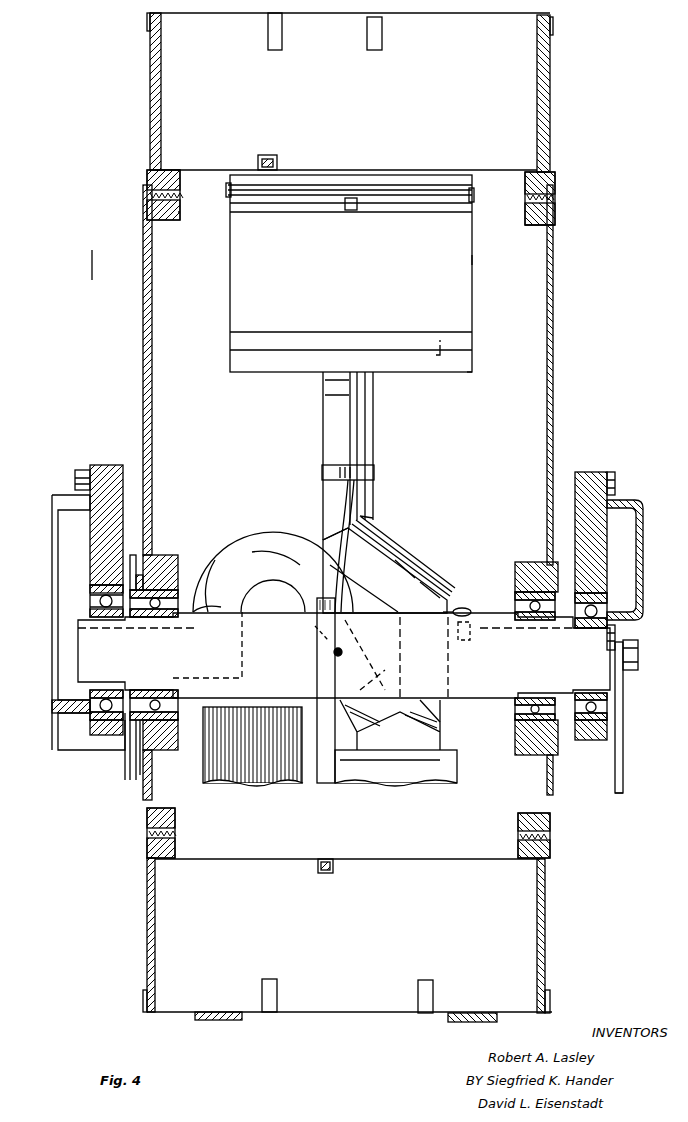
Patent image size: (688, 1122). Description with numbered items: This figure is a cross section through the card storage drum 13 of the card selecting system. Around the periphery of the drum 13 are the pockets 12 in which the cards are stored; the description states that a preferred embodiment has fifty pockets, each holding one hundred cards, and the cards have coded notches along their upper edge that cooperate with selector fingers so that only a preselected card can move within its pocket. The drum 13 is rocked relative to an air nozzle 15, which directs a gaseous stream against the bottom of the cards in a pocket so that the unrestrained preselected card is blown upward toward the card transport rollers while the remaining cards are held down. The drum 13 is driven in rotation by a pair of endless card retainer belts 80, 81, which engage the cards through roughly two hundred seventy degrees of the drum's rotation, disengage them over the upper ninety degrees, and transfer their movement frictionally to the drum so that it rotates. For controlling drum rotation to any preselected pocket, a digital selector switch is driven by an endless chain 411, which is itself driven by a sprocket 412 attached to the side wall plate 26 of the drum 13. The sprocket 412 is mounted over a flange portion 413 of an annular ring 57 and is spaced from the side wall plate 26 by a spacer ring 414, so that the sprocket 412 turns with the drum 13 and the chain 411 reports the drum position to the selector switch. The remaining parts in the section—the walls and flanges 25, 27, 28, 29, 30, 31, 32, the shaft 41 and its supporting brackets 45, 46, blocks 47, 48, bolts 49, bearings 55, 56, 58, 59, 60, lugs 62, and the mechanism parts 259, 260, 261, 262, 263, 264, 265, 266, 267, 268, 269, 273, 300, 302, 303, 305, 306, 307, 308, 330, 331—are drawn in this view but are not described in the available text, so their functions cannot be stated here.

The pocket 12 is at (560, 96).
The drum 13 is at (612, 242).
The air nozzle 15 is at (348, 278).
The inner wall 25 is at (554, 320).
The side wall plate 26 is at (152, 346).
The housing side wall 27 is at (546, 130).
The housing side wall 28 is at (156, 100).
The flange seal 29 is at (147, 192).
The flange 30 is at (203, 150).
The flange 31 is at (172, 215).
The shoulder 32 is at (188, 168).
The shaft 41 is at (484, 700).
The bracket 45 is at (58, 534).
The bracket 46 is at (643, 527).
The bearing block 47 is at (100, 535).
The bearing block 48 is at (598, 548).
The bolt 49 is at (72, 478).
The bearing 55 is at (110, 682).
The bearing 56 is at (590, 693).
The annular ring 57 is at (178, 556).
The bearing housing 58 is at (518, 565).
The bearing 59 is at (156, 618).
The bearing 60 is at (538, 623).
The lug 62 is at (282, 45).
The card retainer belt 80 is at (219, 1011).
The card retainer belt 81 is at (476, 1013).
The pin 259 is at (466, 607).
The block 260 is at (438, 772).
The block portion 261 is at (391, 794).
The arm 262 is at (329, 643).
The pivot pin 263 is at (314, 654).
The cam 264 is at (321, 743).
The wedge 265 is at (378, 545).
The cam disc 266 is at (267, 534).
The slot 267 is at (243, 668).
The cam lobe 268 is at (222, 614).
The pin seat 269 is at (482, 621).
The conduit 273 is at (102, 302).
The tube 300 is at (332, 392).
The cable 302 is at (345, 493).
The collar 303 is at (374, 475).
The plate 305 is at (474, 372).
The plate 306 is at (472, 346).
The wall 307 is at (472, 291).
The rod 308 is at (349, 175).
The disc 330 is at (646, 692).
The disc rim 331 is at (624, 766).
The endless chain 411 is at (126, 777).
The sprocket 412 is at (138, 557).
The flange portion 413 is at (136, 718).
The spacer ring 414 is at (142, 576).